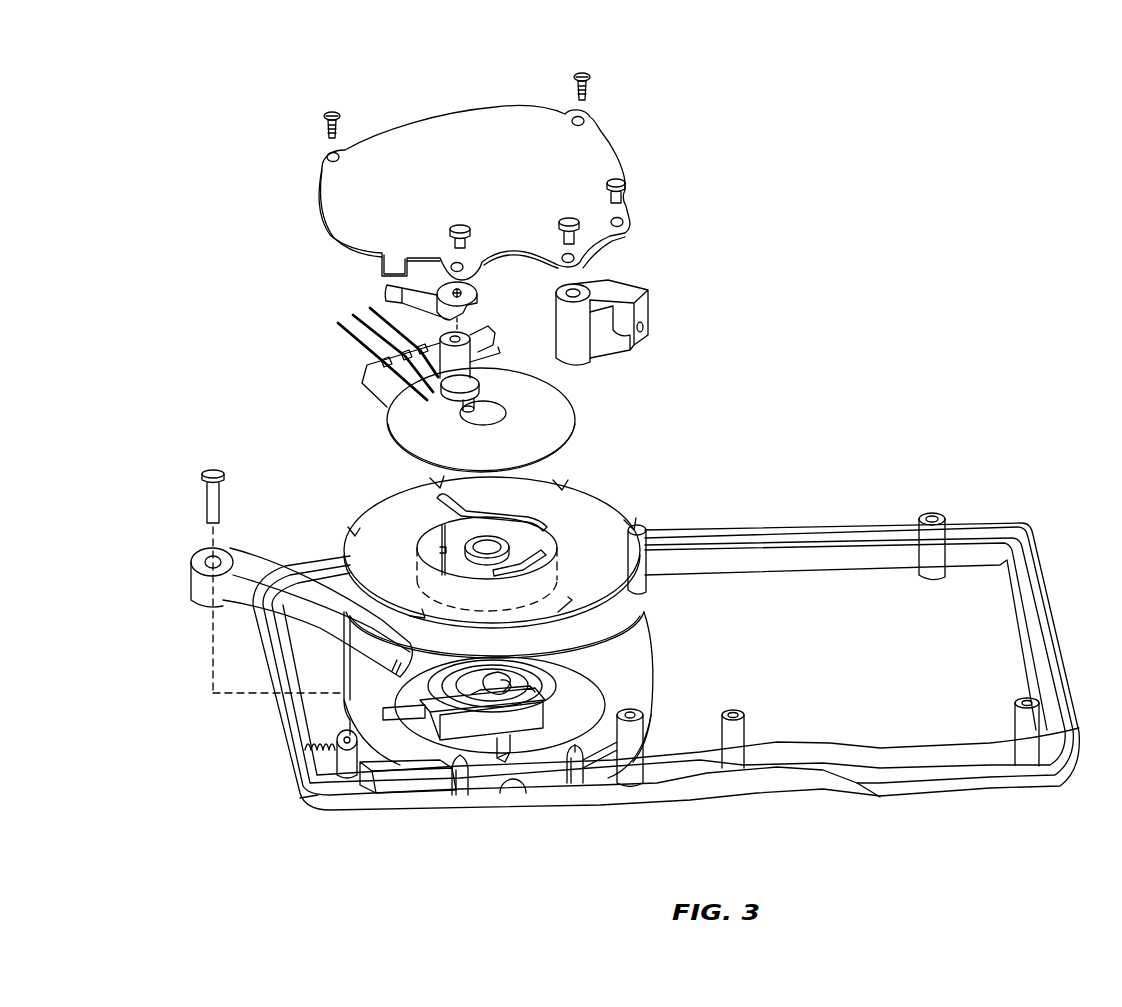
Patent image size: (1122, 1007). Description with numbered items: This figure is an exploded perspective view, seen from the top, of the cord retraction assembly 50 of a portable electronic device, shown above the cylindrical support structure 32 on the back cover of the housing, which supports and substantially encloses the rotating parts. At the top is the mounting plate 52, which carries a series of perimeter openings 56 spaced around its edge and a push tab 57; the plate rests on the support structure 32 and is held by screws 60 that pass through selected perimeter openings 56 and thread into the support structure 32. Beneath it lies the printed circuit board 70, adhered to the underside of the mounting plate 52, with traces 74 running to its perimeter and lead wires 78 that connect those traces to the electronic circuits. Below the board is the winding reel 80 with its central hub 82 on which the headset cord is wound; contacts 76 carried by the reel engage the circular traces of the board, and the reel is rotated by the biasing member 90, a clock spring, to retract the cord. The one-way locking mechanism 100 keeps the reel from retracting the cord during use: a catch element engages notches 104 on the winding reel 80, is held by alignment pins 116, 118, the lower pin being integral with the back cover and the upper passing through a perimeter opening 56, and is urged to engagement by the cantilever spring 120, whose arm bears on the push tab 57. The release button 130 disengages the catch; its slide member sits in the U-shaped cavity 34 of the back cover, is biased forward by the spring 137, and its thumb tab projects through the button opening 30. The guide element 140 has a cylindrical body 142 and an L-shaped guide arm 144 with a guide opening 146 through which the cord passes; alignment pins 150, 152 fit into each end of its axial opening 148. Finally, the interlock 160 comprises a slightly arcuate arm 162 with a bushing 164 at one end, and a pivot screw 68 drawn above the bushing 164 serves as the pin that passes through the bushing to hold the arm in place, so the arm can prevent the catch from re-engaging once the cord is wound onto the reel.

The button opening 30 is at (515, 815).
The support structure 32 is at (658, 650).
The U-shaped cavity 34 is at (386, 772).
The cord retraction assembly 50 is at (853, 242).
The mounting plate 52 is at (619, 159).
The perimeter openings 56 is at (590, 117).
The push tab 57 is at (393, 258).
The screws 60 is at (592, 82).
The pivot screw 68 is at (203, 473).
The printed circuit board 70 is at (580, 419).
The traces 74 is at (400, 392).
The contacts 76 is at (546, 526).
The lead wires 78 is at (345, 325).
The winding reel 80 is at (516, 539).
The central hub 82 is at (558, 581).
The biasing member 90 is at (548, 677).
The locking mechanism 100 is at (480, 362).
The notches 104 is at (358, 522).
The alignment pin 116 is at (463, 782).
The alignment pin 118 is at (463, 226).
The cantilever spring 120 is at (378, 290).
The release button 130 is at (528, 742).
The spring 137 is at (306, 742).
The guide element 140 is at (645, 322).
The cylindrical body 142 is at (590, 345).
The guide arm 144 is at (620, 285).
The guide opening 146 is at (646, 334).
The axial opening 148 is at (566, 295).
The alignment pin 150 is at (587, 768).
The alignment pin 152 is at (573, 216).
The interlock 160 is at (274, 587).
The arm 162 is at (316, 625).
The bushing 164 is at (198, 590).